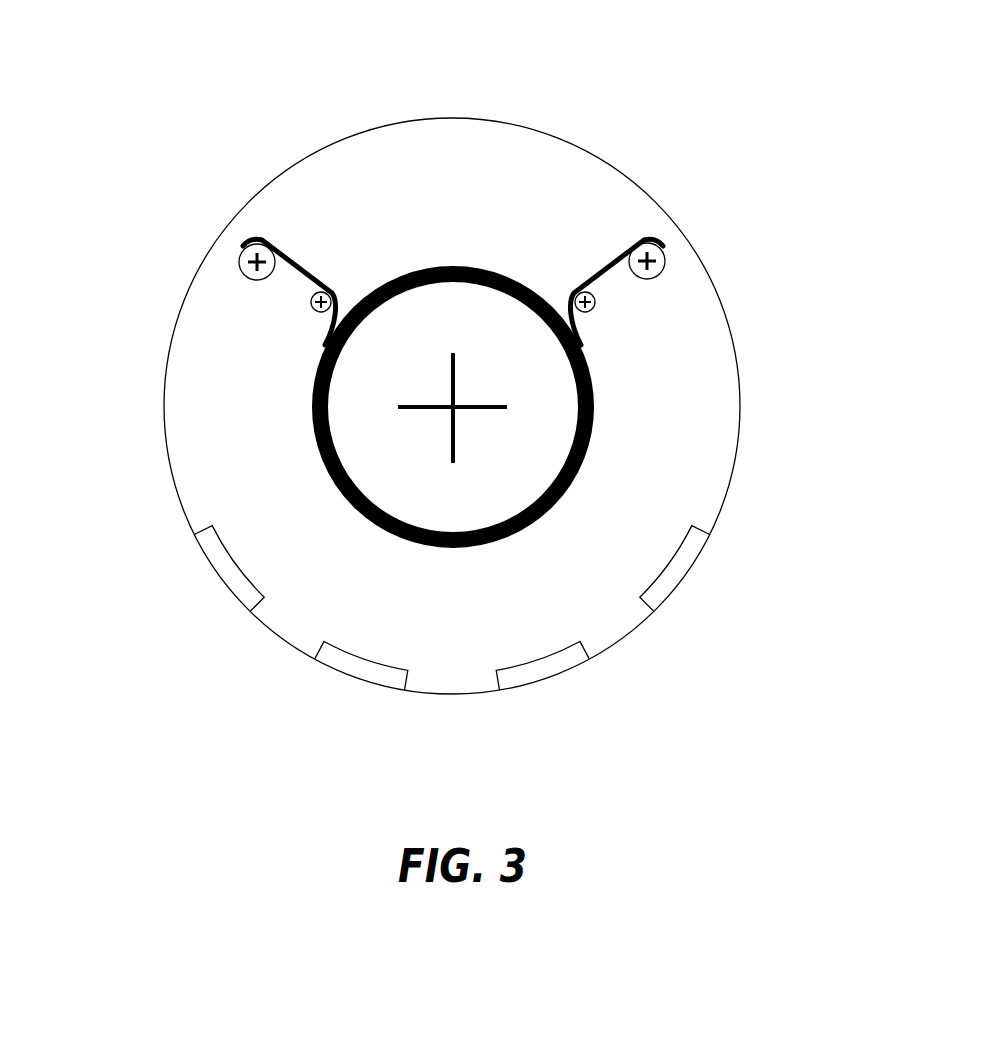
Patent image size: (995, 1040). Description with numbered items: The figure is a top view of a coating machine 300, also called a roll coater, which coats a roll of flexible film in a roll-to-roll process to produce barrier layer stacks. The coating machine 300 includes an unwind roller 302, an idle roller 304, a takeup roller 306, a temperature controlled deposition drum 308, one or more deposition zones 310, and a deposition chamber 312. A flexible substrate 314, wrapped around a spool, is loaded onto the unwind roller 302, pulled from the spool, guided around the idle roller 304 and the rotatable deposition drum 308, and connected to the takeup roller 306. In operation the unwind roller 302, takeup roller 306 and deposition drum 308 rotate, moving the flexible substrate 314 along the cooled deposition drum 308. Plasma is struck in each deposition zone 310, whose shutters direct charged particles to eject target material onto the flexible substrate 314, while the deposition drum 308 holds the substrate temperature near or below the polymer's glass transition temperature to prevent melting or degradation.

The coating machine 300 is at (190, 100).
The unwind roller 302 is at (243, 257).
The idle roller 304 is at (580, 292).
The takeup roller 306 is at (657, 257).
The temperature controlled deposition drum 308 is at (525, 453).
The deposition zone 310 is at (680, 575).
The deposition chamber 312 is at (168, 471).
The flexible substrate 314 is at (305, 277).